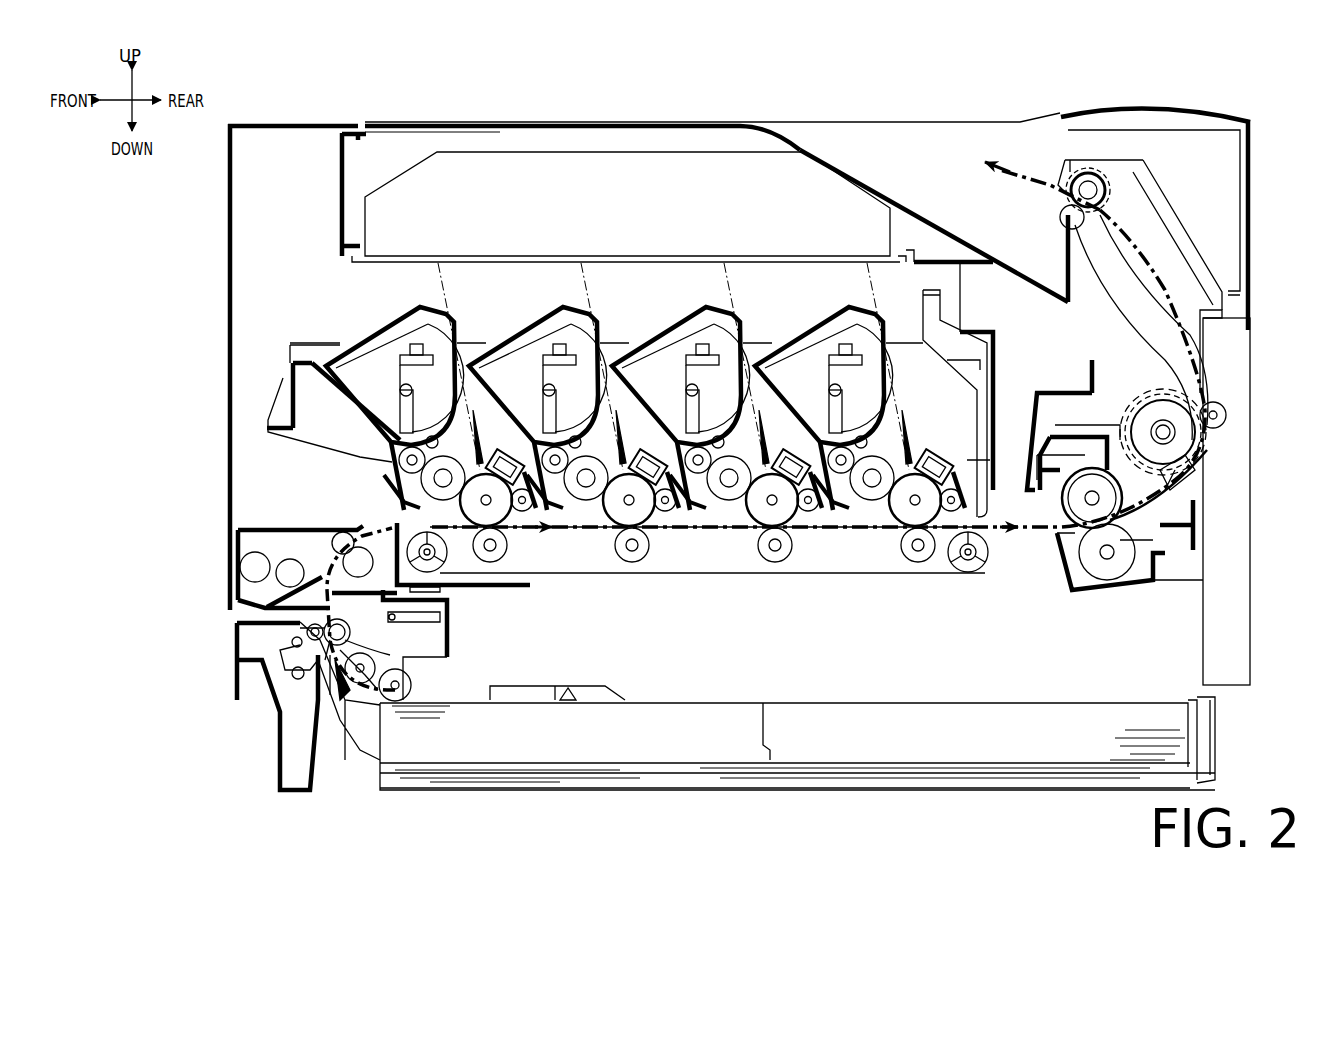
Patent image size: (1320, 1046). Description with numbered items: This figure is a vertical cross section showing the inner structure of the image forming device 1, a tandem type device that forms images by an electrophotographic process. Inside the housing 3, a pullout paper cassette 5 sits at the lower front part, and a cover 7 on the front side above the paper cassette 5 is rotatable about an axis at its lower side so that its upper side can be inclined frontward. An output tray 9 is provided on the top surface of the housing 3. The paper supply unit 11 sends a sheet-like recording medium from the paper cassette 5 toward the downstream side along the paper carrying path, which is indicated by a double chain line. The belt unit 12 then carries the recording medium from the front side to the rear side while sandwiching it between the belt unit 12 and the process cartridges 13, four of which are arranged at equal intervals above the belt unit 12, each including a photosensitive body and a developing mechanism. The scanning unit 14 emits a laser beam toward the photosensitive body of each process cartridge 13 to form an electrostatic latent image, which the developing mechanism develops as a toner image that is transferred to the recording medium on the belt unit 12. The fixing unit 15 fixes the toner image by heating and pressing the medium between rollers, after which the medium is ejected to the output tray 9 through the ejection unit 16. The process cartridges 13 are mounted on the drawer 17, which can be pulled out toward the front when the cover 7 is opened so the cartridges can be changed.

The image forming device 1 is at (1200, 94).
The housing 3 is at (948, 124).
The paper cassette 5 is at (237, 678).
The cover 7 is at (228, 352).
The output tray 9 is at (905, 208).
The paper supply unit 11 is at (447, 622).
The belt unit 12 is at (708, 576).
The process cartridge 13 is at (388, 322).
The scanning unit 14 is at (368, 196).
The fixing unit 15 is at (1100, 422).
The ejection unit 16 is at (1060, 192).
The drawer 17 is at (287, 355).